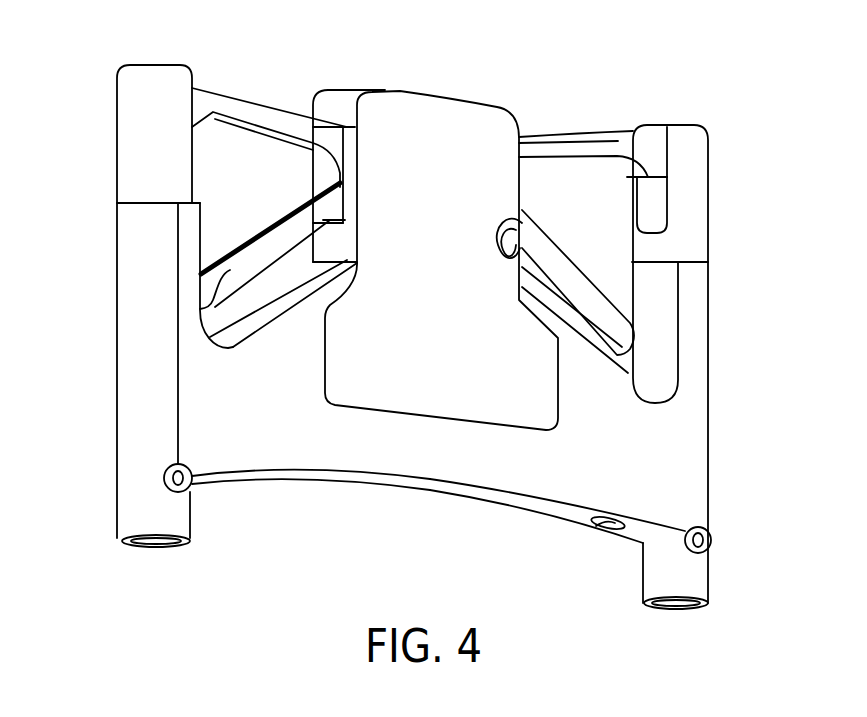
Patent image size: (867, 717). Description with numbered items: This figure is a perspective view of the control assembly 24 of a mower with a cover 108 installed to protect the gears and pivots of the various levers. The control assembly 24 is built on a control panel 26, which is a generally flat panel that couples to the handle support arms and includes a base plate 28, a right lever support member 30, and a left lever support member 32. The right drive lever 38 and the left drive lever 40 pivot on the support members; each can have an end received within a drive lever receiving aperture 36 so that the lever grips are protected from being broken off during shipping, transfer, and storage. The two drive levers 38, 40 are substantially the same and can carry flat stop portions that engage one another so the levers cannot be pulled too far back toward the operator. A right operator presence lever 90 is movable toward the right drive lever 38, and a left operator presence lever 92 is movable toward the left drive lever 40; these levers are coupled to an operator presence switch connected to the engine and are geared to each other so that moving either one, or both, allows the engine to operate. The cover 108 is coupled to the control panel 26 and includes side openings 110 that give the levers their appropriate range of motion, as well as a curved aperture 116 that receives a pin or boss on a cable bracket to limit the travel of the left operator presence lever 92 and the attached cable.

The control assembly 24 is at (652, 87).
The control panel 26 is at (543, 478).
The base plate 28 is at (310, 443).
The right lever support member 30 is at (128, 138).
The left lever support member 32 is at (690, 244).
The drive lever receiving aperture 36 is at (657, 203).
The right drive lever 38 is at (233, 108).
The left drive lever 40 is at (582, 143).
The right operator presence lever 90 is at (252, 247).
The left operator presence lever 92 is at (535, 242).
The cover 108 is at (393, 105).
The side opening 110 is at (347, 163).
The curved aperture 116 is at (500, 243).